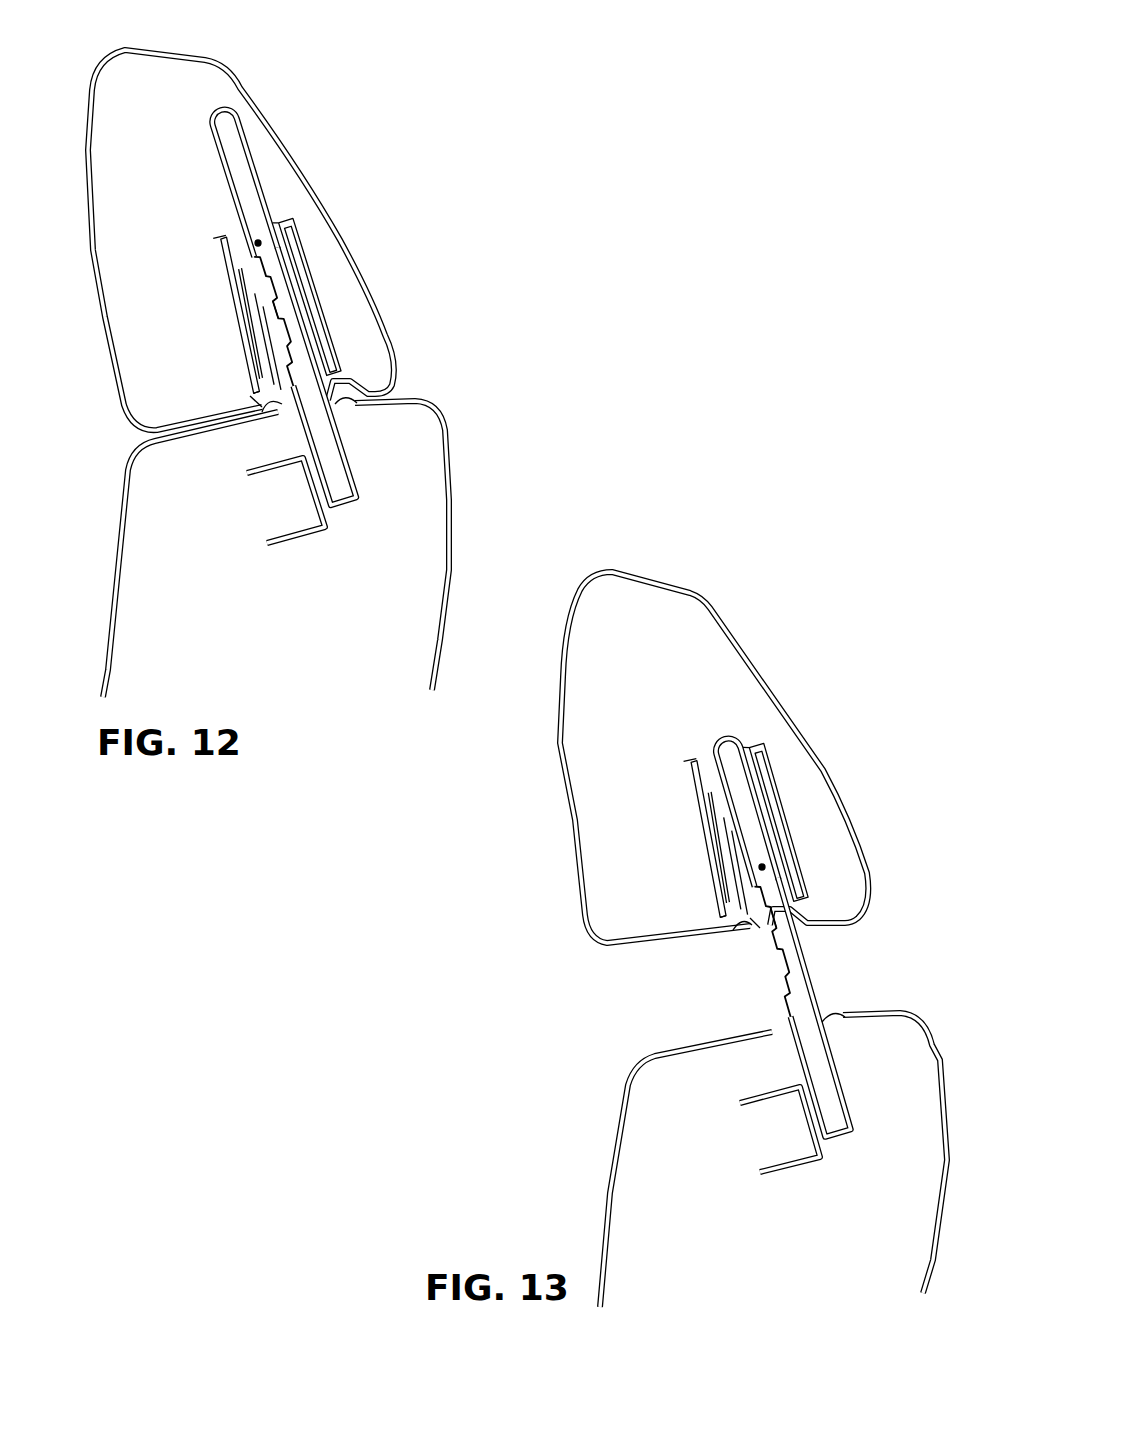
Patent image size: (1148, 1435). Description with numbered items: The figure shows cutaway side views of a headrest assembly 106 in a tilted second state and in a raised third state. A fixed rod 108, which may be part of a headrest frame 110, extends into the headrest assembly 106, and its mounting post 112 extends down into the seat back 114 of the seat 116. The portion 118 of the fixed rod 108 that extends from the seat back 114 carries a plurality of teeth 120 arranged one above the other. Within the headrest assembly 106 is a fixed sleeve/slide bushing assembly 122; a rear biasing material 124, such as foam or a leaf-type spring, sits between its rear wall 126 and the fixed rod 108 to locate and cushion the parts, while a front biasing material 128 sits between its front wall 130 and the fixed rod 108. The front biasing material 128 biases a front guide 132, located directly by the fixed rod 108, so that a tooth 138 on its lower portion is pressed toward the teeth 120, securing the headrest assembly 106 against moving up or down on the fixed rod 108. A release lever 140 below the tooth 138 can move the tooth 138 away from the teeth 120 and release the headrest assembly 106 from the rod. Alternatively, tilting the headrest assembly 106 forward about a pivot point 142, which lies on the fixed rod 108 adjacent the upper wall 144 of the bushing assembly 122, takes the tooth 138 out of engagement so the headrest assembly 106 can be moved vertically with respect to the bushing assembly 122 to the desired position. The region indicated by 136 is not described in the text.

In FIG. 12, the headrest assembly 106 is at (340, 120).
In FIG. 13, the headrest assembly 106 is at (812, 590).
In FIG. 12, the fixed rod 108 is at (352, 458).
In FIG. 13, the fixed rod 108 is at (846, 1080).
In FIG. 12, the headrest frame 110 is at (226, 118).
In FIG. 13, the headrest frame 110 is at (728, 735).
In FIG. 12, the mounting post 112 is at (305, 546).
In FIG. 13, the mounting post 112 is at (793, 1172).
In FIG. 12, the seat back 114 is at (435, 415).
In FIG. 13, the seat back 114 is at (927, 1020).
In FIG. 12, the seat 116 is at (118, 575).
In FIG. 13, the seat 116 is at (620, 1130).
In FIG. 12, the portion of the fixed rod 118 is at (288, 290).
In FIG. 13, the portion of the fixed rod 118 is at (795, 952).
In FIG. 12, the teeth 120 is at (285, 325).
In FIG. 13, the teeth 120 is at (802, 903).
In FIG. 12, the sleeve/slide bushing assembly 122 is at (228, 281).
In FIG. 13, the sleeve/slide bushing assembly 122 is at (692, 775).
In FIG. 12, the rear biasing material 124 is at (318, 302).
In FIG. 13, the rear biasing material 124 is at (785, 830).
In FIG. 12, the rear wall 126 is at (305, 242).
In FIG. 13, the rear wall 126 is at (776, 765).
In FIG. 12, the front biasing material 128 is at (242, 297).
In FIG. 13, the front biasing material 128 is at (715, 812).
In FIG. 12, the front wall 130 is at (255, 362).
In FIG. 13, the front wall 130 is at (727, 887).
In FIG. 12, the front guide 132 is at (257, 340).
In FIG. 13, the front guide 132 is at (737, 868).
In FIG. 12, the engagement region 136 is at (225, 389).
In FIG. 13, the engagement region 136 is at (695, 912).
In FIG. 12, the tooth 138 is at (256, 394).
In FIG. 13, the tooth 138 is at (757, 925).
In FIG. 12, the release lever 140 is at (269, 412).
In FIG. 13, the release lever 140 is at (740, 936).
In FIG. 12, the pivot point 142 is at (255, 244).
In FIG. 13, the pivot point 142 is at (765, 867).
In FIG. 12, the upper wall 144 is at (224, 237).
In FIG. 13, the upper wall 144 is at (700, 768).